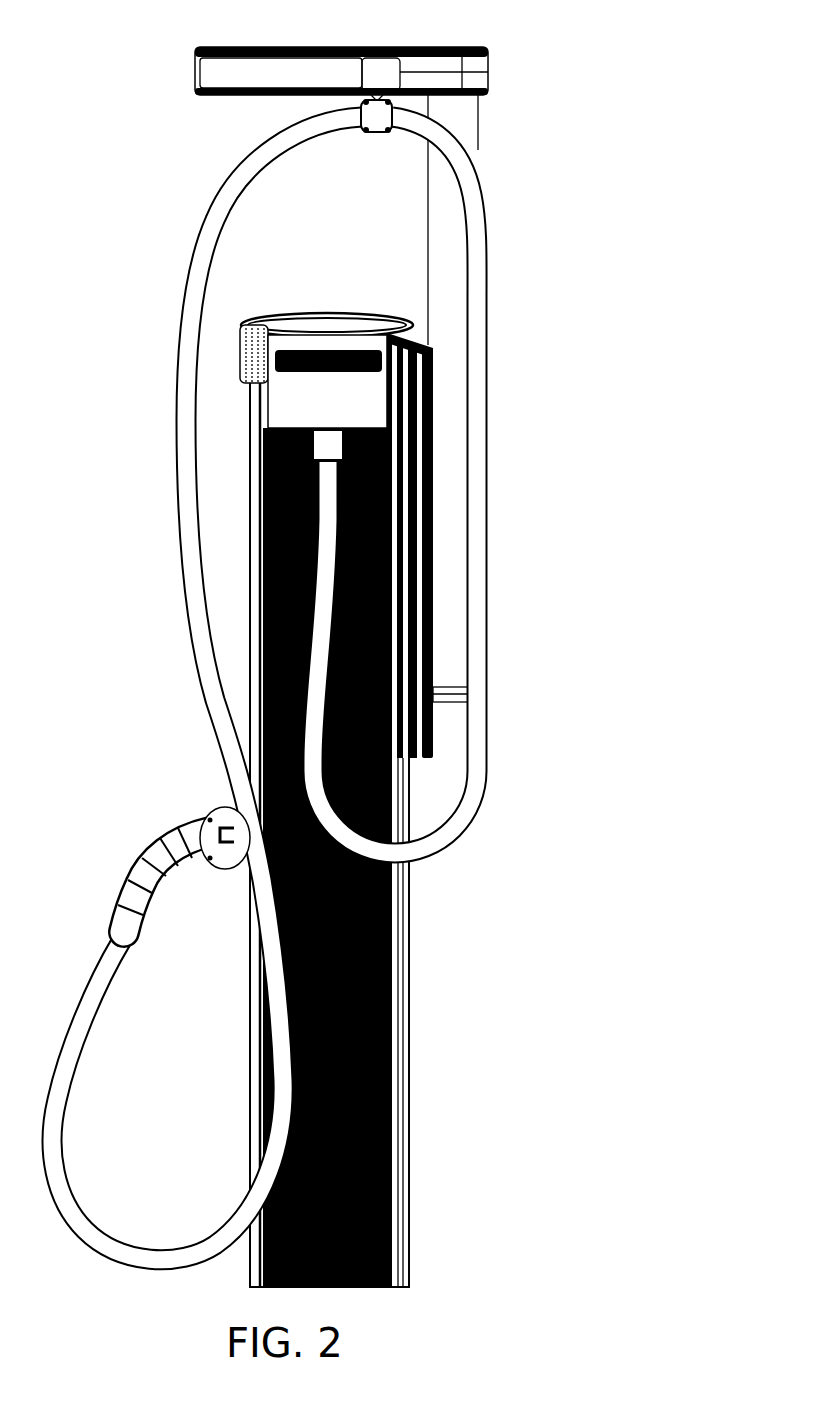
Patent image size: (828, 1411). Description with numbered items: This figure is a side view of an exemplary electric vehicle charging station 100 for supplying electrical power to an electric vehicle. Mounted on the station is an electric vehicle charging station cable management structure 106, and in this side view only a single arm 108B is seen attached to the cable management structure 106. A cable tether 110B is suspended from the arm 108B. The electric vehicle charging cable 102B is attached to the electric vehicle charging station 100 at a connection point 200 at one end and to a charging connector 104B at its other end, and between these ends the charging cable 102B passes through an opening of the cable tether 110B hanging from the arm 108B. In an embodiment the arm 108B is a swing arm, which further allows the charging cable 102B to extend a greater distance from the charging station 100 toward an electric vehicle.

The electric vehicle charging station 100 is at (271, 691).
The connection point 200 is at (265, 428).
The electric vehicle charging cable 102B is at (492, 308).
The charging connector 104B is at (136, 846).
The electric vehicle charging station cable management structure 106 is at (294, 60).
The arm 108B is at (194, 76).
The cable tether 110B is at (385, 142).